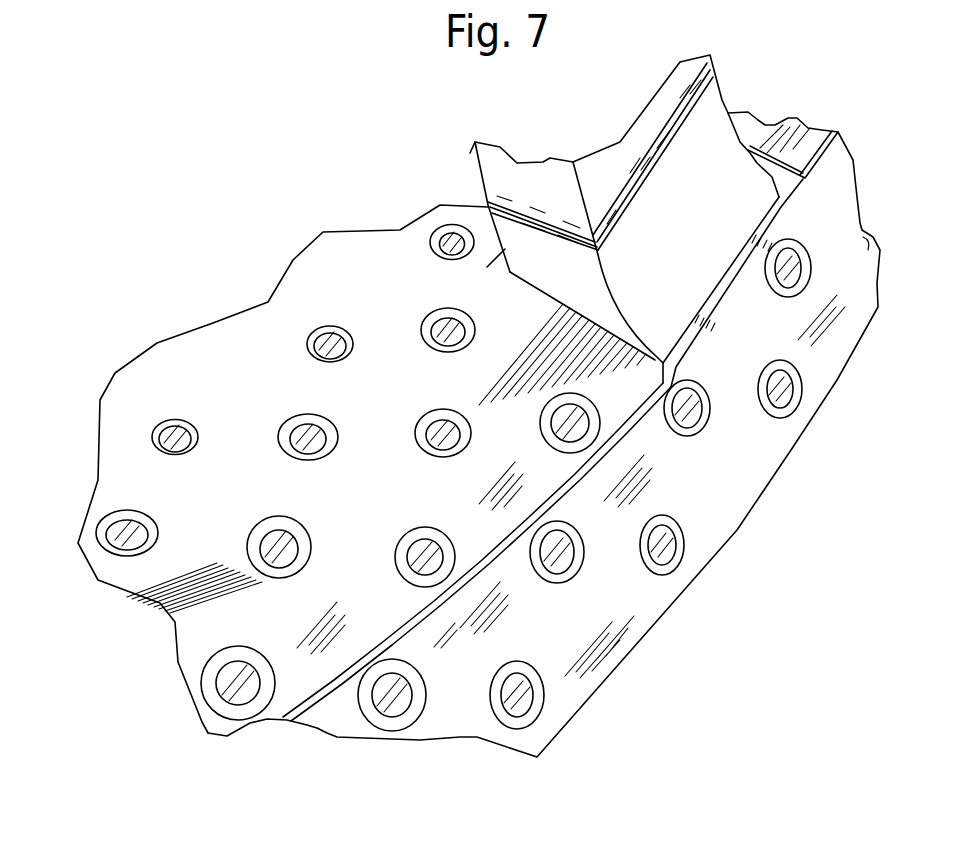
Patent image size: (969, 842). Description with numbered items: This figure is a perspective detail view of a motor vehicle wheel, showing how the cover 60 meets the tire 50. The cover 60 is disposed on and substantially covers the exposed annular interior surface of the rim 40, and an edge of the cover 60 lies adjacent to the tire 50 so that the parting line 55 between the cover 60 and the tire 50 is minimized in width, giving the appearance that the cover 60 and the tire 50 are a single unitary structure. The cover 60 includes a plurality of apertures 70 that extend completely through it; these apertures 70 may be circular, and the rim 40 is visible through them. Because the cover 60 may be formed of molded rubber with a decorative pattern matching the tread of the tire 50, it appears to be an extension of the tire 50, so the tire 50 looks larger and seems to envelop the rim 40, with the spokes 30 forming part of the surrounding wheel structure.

The spokes 30 is at (725, 152).
The rim 40 is at (240, 693).
The tire 50 is at (742, 493).
The parting line 55 is at (323, 700).
The cover 60 is at (200, 630).
The apertures 70 is at (437, 318).